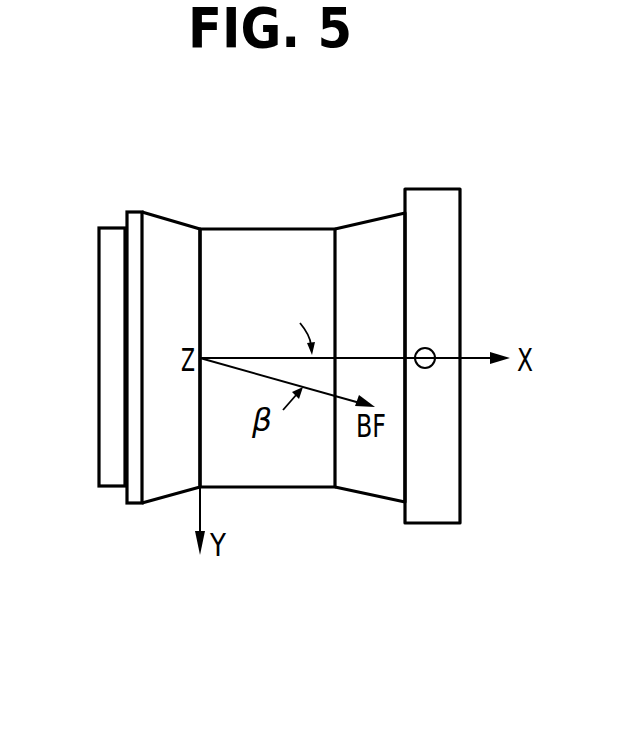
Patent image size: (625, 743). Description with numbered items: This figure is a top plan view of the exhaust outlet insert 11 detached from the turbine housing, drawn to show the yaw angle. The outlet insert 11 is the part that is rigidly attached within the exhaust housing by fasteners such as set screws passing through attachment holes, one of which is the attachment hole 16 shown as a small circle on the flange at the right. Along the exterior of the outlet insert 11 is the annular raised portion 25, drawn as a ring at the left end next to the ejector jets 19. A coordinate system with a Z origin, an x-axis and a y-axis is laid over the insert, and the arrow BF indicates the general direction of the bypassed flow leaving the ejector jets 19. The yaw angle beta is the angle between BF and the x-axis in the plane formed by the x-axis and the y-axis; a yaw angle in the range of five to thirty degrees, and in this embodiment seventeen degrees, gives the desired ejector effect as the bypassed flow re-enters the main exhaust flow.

The outlet insert 11 is at (280, 191).
The ejector jets 19 is at (119, 217).
The annular raised portion 25 is at (157, 232).
The attachment hole 16 is at (429, 348).